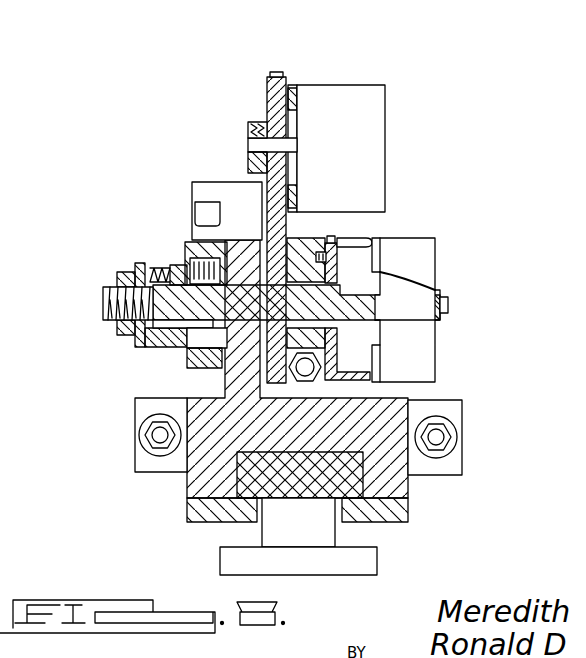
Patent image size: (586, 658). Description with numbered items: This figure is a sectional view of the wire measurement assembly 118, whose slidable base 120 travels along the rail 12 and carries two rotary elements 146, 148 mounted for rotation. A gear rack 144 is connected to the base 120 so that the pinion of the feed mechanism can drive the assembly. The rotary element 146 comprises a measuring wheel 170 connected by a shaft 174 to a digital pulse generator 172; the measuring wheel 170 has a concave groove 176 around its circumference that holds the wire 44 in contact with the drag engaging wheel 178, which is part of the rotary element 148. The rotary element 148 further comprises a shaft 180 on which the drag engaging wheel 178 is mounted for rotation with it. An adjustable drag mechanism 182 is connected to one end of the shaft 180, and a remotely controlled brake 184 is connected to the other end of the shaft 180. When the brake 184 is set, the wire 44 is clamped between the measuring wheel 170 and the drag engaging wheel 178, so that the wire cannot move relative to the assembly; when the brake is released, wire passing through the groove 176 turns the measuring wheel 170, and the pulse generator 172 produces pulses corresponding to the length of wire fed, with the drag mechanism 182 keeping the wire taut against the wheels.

The rail 12 is at (377, 565).
The wire 44 is at (290, 231).
The wire measurement assembly 118 is at (484, 423).
The slidable base 120 is at (402, 515).
The gear rack 144 is at (200, 210).
The rotary element 146 is at (246, 139).
The rotary element 148 is at (101, 300).
The measuring wheel 170 is at (267, 88).
The digital pulse generator 172 is at (338, 97).
The shaft 174 is at (290, 146).
The concave groove 176 is at (288, 28).
The drag engaging wheel 178 is at (272, 370).
The shaft 180 is at (427, 326).
The adjustable drag mechanism 182 is at (145, 262).
The remotely controlled brake 184 is at (417, 246).